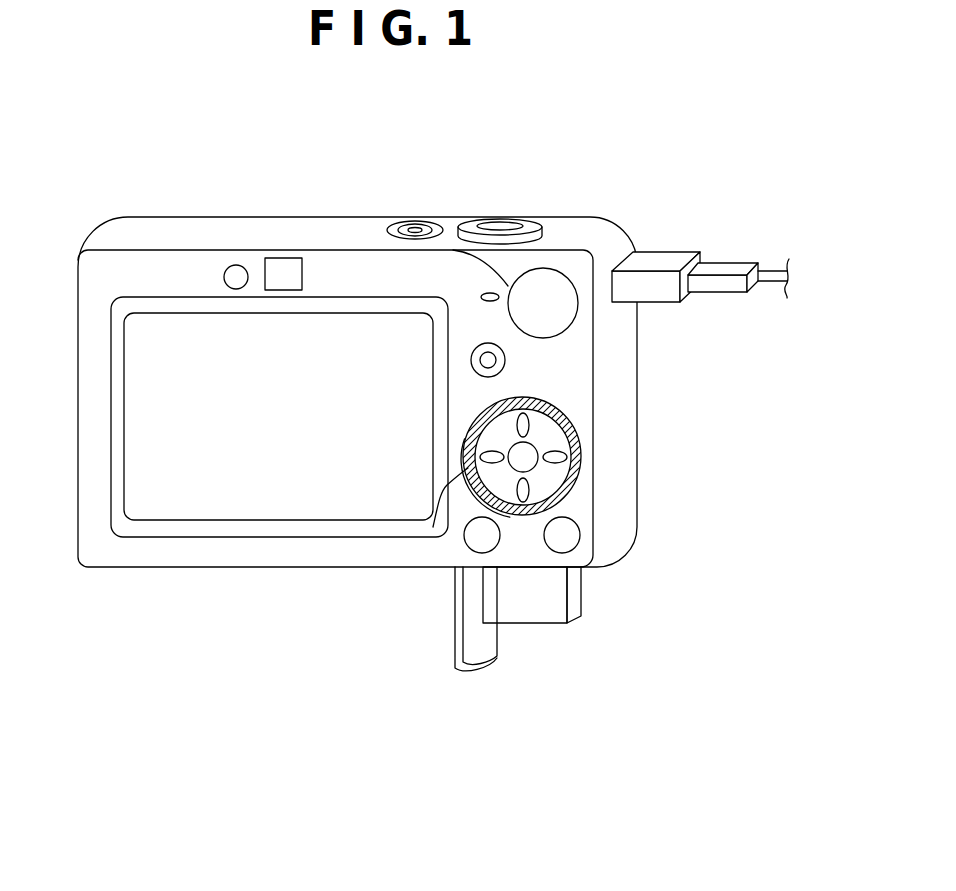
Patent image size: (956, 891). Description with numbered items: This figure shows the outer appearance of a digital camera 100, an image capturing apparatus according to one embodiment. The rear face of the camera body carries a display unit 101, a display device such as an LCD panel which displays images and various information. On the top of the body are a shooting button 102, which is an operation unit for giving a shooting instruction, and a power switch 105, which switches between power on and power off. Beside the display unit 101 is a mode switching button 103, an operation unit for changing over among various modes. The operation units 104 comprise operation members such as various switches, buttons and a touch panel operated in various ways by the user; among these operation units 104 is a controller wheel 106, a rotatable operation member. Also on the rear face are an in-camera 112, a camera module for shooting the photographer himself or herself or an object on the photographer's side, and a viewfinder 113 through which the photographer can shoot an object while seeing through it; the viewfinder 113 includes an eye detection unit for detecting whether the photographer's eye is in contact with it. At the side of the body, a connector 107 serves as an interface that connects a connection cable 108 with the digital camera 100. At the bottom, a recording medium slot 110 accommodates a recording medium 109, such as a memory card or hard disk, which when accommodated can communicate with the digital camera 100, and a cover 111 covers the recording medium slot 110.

The digital camera 100 is at (164, 599).
The display unit 101 is at (155, 343).
The shooting button 102 is at (500, 226).
The mode switching button 103 is at (457, 250).
The operation units 104 is at (545, 234).
The power switch 105 is at (416, 227).
The controller wheel 106 is at (433, 527).
The connector 107 is at (660, 262).
The connection cable 108 is at (728, 272).
The recording medium 109 is at (533, 618).
The recording medium slot 110 is at (498, 569).
The cover 111 is at (477, 673).
The in-camera 112 is at (234, 274).
The viewfinder 113 is at (290, 272).